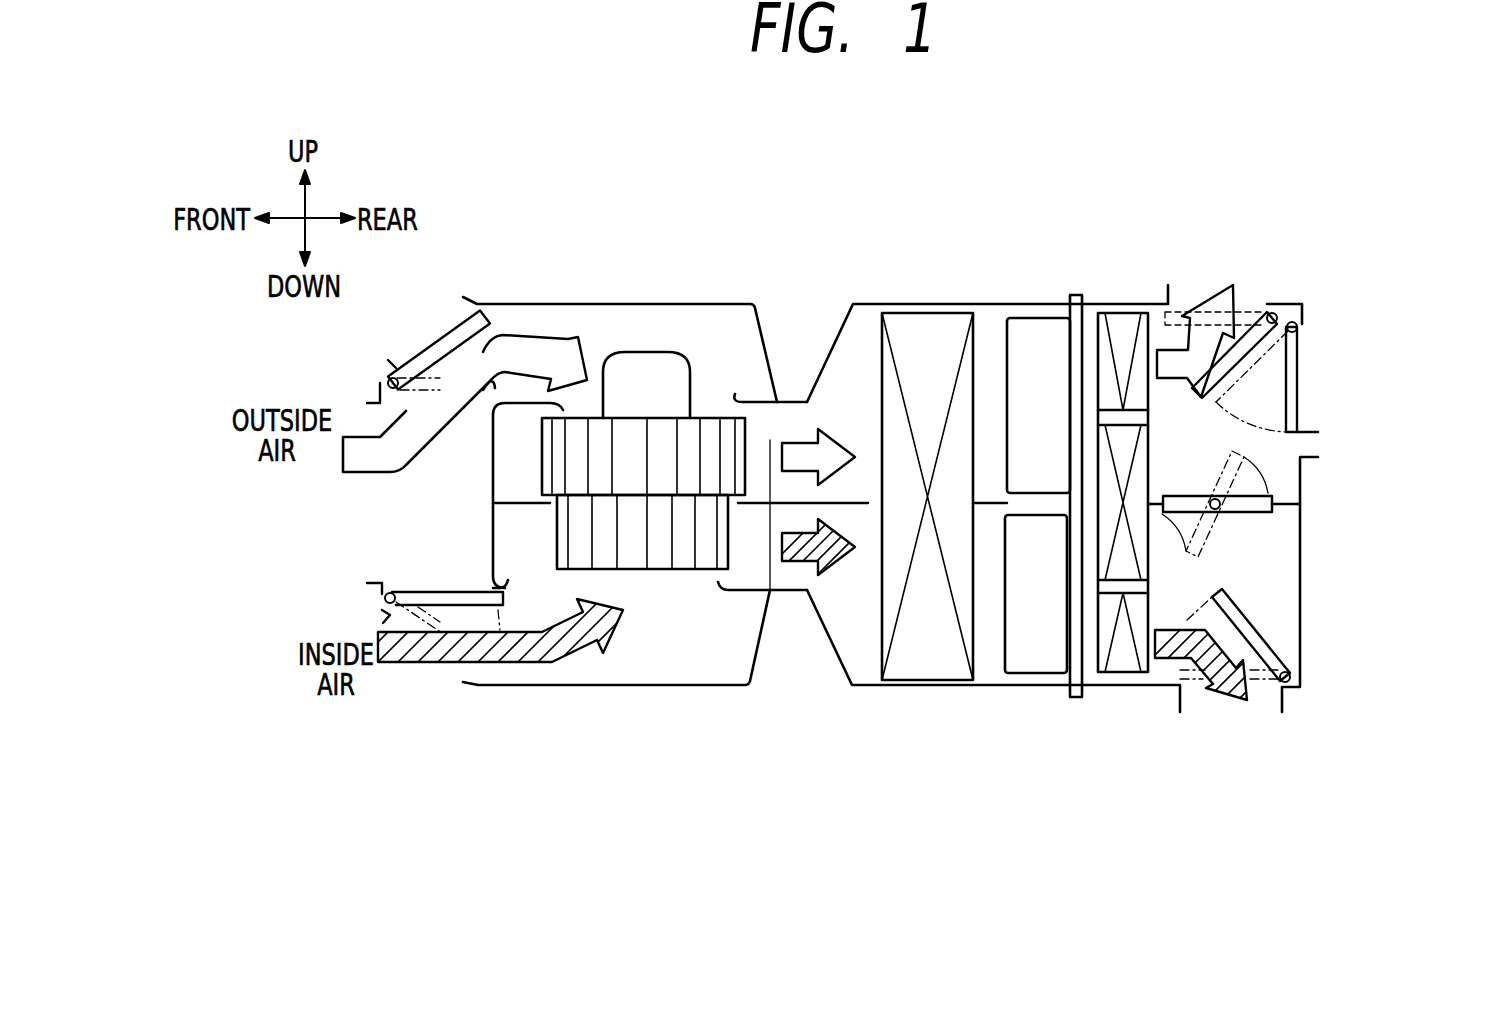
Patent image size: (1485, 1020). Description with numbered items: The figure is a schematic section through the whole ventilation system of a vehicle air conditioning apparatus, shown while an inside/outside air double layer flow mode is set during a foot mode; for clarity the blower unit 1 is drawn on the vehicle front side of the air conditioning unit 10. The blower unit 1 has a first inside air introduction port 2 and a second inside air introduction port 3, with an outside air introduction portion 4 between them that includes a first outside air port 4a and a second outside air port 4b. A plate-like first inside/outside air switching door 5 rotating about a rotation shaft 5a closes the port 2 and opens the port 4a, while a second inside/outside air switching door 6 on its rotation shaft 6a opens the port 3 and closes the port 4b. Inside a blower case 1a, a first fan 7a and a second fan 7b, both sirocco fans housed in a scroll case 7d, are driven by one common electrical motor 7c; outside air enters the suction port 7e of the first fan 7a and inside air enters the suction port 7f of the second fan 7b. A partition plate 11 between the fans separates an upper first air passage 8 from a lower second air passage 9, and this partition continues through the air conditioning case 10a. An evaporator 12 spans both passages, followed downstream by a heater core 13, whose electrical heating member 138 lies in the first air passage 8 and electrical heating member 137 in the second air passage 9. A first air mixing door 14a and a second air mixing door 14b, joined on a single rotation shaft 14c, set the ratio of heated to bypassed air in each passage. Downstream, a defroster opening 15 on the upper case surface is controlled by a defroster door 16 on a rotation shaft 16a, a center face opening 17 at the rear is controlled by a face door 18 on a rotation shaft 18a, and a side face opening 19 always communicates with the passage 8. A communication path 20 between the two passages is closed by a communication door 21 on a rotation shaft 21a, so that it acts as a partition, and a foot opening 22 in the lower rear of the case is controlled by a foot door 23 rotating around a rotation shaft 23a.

The blower unit 1 is at (567, 300).
The blower case 1a is at (517, 304).
The first inside air introduction port 2 is at (413, 340).
The second inside air introduction port 3 is at (458, 672).
The outside air introduction portion 4 is at (370, 497).
The first outside air port 4a is at (393, 407).
The second outside air port 4b is at (448, 583).
The first inside/outside air switching door 5 is at (453, 324).
The rotation shaft 5a is at (380, 383).
The second inside/outside air switching door 6 is at (440, 591).
The rotation shaft 6a is at (386, 600).
The first fan 7a is at (715, 437).
The second fan 7b is at (652, 555).
The electrical motor 7c is at (640, 378).
The scroll case 7d is at (493, 483).
The suction port of first fan 7e is at (700, 410).
The suction port of second fan 7f is at (633, 583).
The first air passage 8 is at (768, 440).
The second air passage 9 is at (742, 557).
The air conditioning unit 10 is at (990, 300).
The air conditioning case 10a is at (940, 304).
The partition plate 11 is at (772, 597).
The evaporator 12 is at (900, 330).
The heater core 13 is at (1118, 330).
The first air mixing door 14a is at (1047, 335).
The second air mixing door 14b is at (1030, 663).
The rotation shaft 14c is at (1075, 300).
The defroster opening 15 is at (1207, 295).
The defroster door 16 is at (1255, 322).
The rotation shaft 16a is at (1297, 323).
The center face opening 17 is at (1300, 358).
The face door 18 is at (1297, 388).
The rotation shaft 18a is at (1300, 327).
The side face opening 19 is at (1318, 453).
The communication path 20 is at (1247, 482).
The communication door 21 is at (1240, 517).
The rotation shaft 21a is at (1217, 511).
The foot opening 22 is at (1213, 698).
The foot door 23 is at (1263, 647).
The rotation shaft 23a is at (1290, 677).
The electrical heating member 137 is at (1120, 672).
The electrical heating member 138 is at (1122, 411).